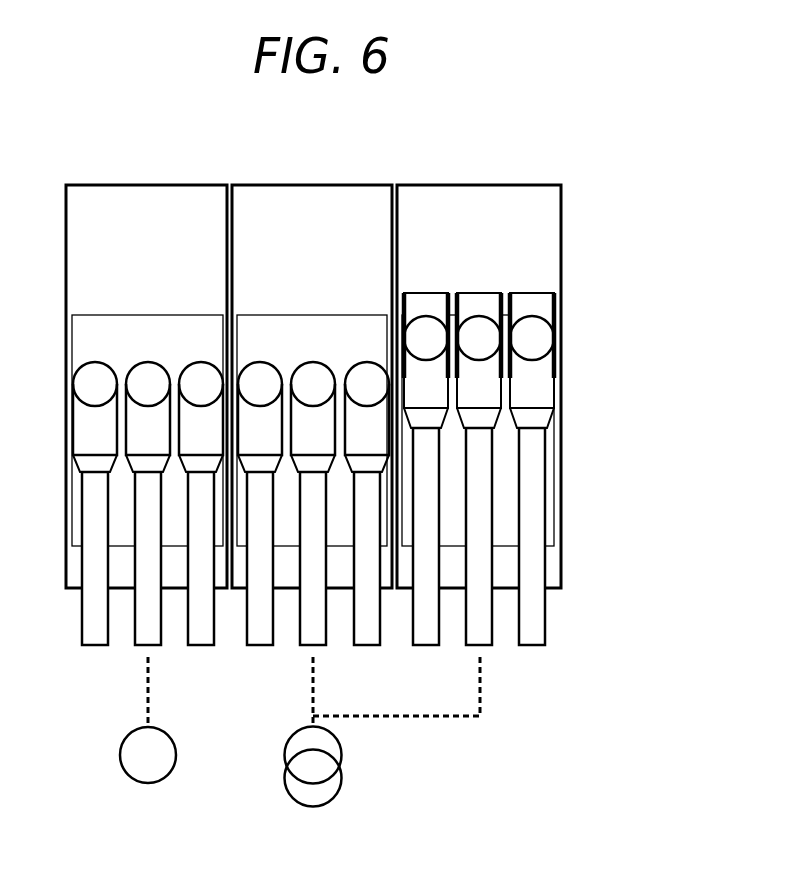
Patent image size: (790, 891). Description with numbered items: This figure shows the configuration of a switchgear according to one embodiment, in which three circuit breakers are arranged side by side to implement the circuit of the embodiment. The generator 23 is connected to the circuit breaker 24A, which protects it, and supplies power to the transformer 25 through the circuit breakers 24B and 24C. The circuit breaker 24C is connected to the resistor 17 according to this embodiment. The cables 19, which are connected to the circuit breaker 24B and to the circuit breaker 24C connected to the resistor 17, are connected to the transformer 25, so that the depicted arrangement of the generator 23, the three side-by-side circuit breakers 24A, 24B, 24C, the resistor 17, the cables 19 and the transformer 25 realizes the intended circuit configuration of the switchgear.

The circuit breaker 24A is at (152, 332).
The circuit breaker 24B is at (314, 332).
The circuit breaker 24C is at (525, 415).
The resistor 17 is at (552, 307).
The cables 19 is at (533, 571).
The generator 23 is at (147, 778).
The transformer 25 is at (341, 777).